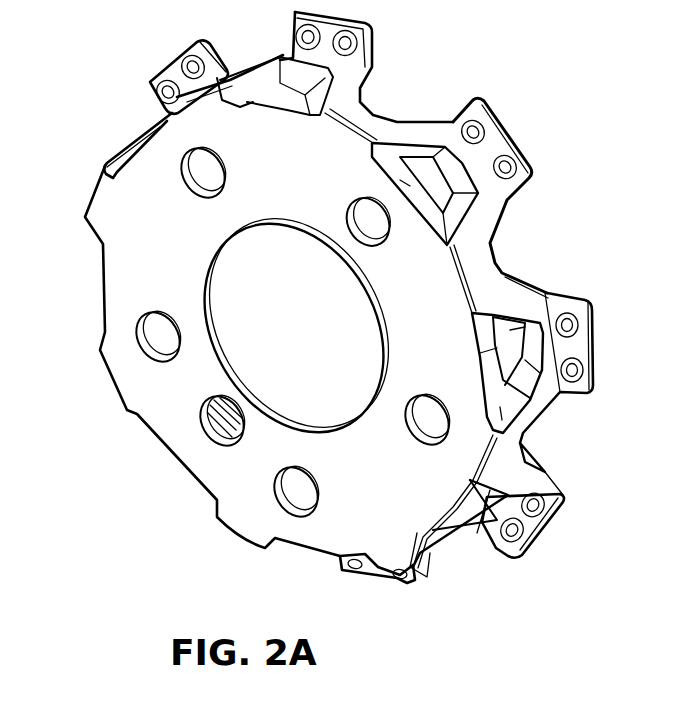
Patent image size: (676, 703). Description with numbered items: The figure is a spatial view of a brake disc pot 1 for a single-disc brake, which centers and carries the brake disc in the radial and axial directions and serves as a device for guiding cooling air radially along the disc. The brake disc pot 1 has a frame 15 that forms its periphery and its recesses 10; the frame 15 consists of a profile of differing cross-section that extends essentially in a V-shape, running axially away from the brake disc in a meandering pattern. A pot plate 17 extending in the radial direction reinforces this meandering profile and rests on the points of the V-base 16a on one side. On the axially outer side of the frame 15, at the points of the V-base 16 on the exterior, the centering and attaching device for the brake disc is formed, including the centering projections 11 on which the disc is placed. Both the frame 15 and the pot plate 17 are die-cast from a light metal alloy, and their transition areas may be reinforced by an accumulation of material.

The brake disc pot 1 is at (80, 120).
The recesses 10 is at (507, 258).
The centering projections 11 is at (497, 142).
The frame 15 is at (418, 132).
The points of the V-base 16 is at (550, 348).
The points of the V-base 16a is at (500, 460).
The pot plate 17 is at (120, 272).